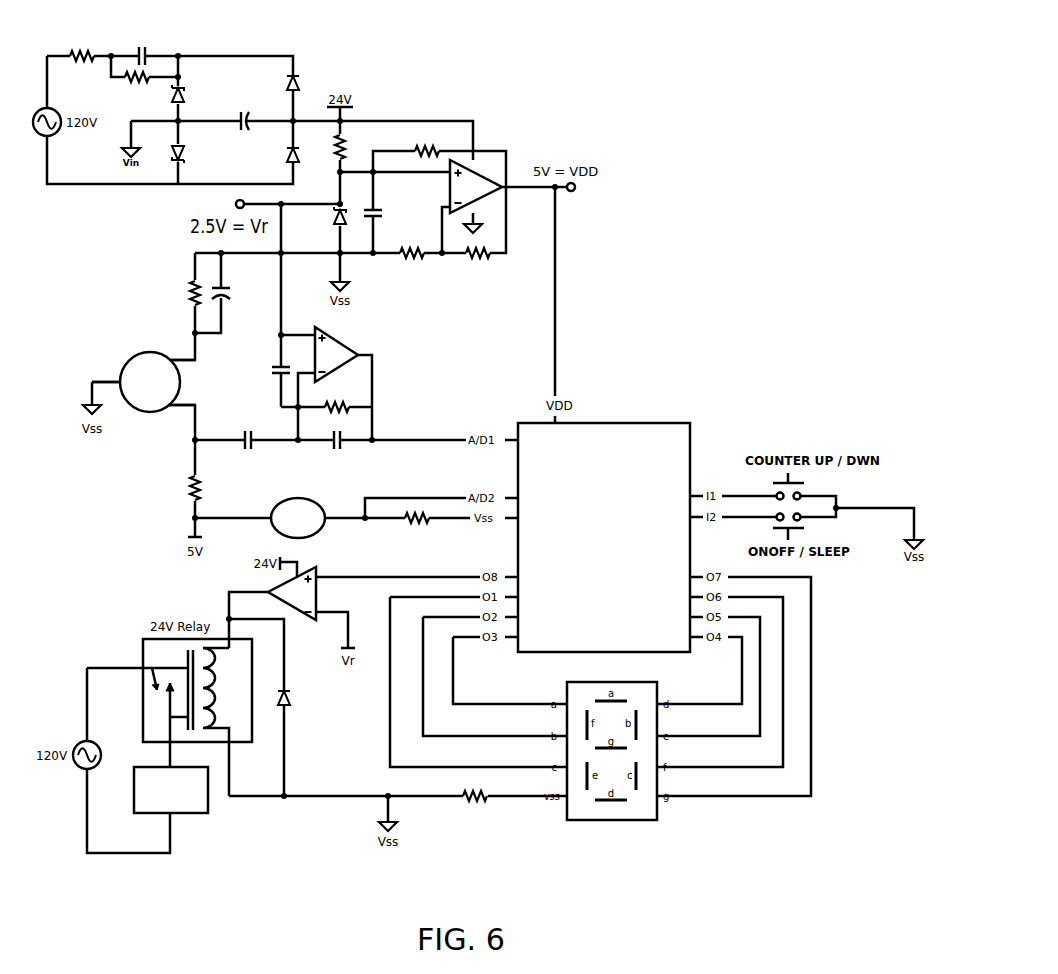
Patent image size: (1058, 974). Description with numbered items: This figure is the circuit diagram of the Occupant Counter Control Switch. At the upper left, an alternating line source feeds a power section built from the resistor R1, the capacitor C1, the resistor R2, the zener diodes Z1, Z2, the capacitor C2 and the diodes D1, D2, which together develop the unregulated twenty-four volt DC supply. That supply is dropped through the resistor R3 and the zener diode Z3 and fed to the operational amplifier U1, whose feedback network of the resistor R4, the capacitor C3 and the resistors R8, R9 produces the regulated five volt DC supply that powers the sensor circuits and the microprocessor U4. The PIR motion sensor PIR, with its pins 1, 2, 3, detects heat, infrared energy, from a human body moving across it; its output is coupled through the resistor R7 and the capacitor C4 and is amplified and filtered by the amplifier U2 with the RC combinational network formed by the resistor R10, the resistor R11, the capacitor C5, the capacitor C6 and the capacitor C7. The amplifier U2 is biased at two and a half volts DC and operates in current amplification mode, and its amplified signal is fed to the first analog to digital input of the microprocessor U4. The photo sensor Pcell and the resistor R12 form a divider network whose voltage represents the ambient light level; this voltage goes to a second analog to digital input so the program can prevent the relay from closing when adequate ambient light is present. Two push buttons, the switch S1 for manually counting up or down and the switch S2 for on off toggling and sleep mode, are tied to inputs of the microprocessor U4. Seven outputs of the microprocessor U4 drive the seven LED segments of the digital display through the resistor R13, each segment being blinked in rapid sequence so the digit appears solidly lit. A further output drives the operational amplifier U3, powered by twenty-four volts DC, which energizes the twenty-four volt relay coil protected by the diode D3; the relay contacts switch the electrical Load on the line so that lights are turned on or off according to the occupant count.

The resistor R1 is at (82, 48).
The capacitor C1 is at (142, 49).
The resistor R2 is at (137, 84).
The zener diode Z1 is at (191, 95).
The zener diode Z2 is at (191, 154).
The capacitor C2 is at (244, 113).
The diode D1 is at (282, 79).
The diode D2 is at (282, 155).
The resistor R3 is at (330, 147).
The zener diode Z3 is at (330, 216).
The resistor R4 is at (427, 144).
The capacitor C3 is at (382, 214).
The operational amplifier U1 (5V regulator) U1 is at (476, 186).
The resistor R8 is at (412, 262).
The resistor R9 is at (478, 262).
The resistor R7 is at (184, 293).
The capacitor C4 is at (230, 293).
The PIR motion sensor PIR is at (150, 382).
The PIR sensor pin 1 is at (182, 351).
The PIR sensor pin 2 is at (182, 413).
The PIR sensor pin 3 is at (106, 373).
The amplifier U2 is at (336, 354).
The capacitor C6 is at (272, 371).
The resistor R10 is at (337, 400).
The capacitor C5 is at (248, 433).
The capacitor C7 is at (337, 446).
The resistor R11 is at (180, 488).
The photo sensor Pcell is at (298, 518).
The resistor R12 is at (417, 526).
The microprocessor U4 is at (604, 537).
The switch S1 counter up/down S1 is at (800, 486).
The switch S2 on-off/sleep S2 is at (800, 527).
The comparator U3 is at (292, 593).
The diode D3 is at (294, 698).
The resistor R13 is at (475, 803).
The load Load is at (171, 790).